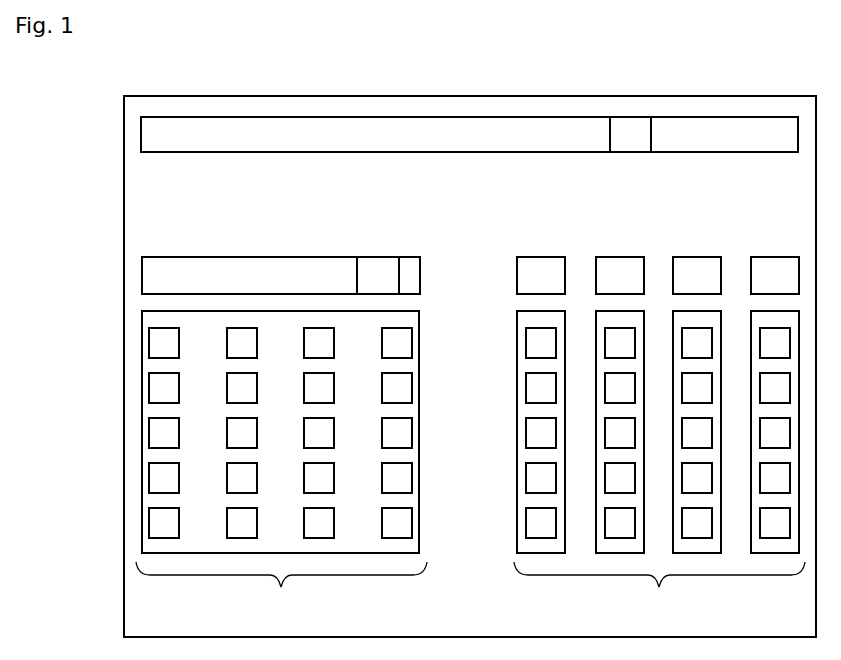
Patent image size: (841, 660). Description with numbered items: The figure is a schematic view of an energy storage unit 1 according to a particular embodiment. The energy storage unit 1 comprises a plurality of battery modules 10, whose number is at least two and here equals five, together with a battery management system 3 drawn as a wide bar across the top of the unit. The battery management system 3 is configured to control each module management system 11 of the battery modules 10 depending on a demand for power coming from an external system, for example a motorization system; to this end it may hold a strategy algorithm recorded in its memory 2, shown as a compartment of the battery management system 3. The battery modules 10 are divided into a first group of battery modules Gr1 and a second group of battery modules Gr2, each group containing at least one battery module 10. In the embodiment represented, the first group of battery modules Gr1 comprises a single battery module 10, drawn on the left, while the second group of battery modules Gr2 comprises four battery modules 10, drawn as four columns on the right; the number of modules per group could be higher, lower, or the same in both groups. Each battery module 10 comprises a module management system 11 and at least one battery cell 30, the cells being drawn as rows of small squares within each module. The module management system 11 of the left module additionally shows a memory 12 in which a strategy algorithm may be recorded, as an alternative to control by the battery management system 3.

The energy storage unit 1 is at (122, 163).
The memory 2 is at (623, 146).
The battery management system 3 is at (463, 146).
The battery module 10 is at (142, 323).
The module management system 11 is at (265, 288).
The memory 12 is at (368, 288).
The battery cell 30 is at (148, 336).
The first group of battery modules Gr1 is at (281, 587).
The second group of battery modules Gr2 is at (659, 462).